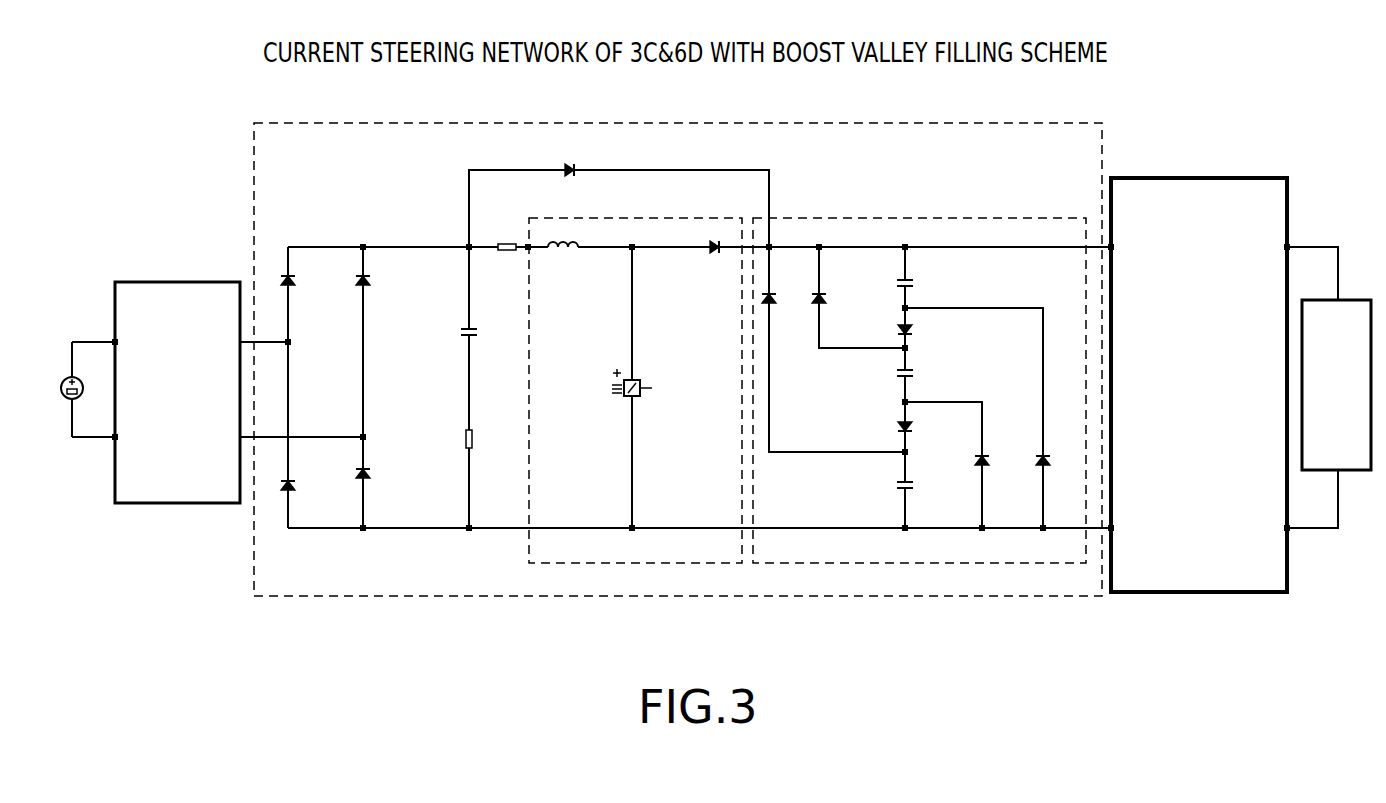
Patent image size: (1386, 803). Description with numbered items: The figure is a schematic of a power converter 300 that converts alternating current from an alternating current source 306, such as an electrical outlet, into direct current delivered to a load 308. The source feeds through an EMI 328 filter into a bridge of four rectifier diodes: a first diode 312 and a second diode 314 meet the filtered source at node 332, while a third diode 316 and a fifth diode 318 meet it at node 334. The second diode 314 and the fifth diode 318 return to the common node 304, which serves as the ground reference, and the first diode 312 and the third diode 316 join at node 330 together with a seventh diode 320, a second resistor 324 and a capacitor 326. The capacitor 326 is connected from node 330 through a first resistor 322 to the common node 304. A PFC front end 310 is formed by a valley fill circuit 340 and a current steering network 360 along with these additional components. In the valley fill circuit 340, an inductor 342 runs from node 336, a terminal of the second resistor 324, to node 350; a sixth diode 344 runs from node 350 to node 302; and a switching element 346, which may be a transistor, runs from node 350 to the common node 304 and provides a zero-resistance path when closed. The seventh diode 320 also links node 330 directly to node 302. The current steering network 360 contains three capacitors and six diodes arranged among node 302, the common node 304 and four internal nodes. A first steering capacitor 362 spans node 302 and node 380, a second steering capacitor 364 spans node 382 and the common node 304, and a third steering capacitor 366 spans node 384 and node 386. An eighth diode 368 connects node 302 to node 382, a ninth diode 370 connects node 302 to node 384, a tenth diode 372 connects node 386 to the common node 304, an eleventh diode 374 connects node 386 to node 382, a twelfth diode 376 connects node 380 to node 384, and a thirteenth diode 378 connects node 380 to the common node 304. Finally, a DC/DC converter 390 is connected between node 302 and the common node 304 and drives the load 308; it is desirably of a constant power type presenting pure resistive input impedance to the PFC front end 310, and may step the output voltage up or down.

The power converter 300 is at (1150, 82).
The node 302 is at (948, 245).
The common node 304 is at (875, 530).
The alternating current source 306 is at (72, 400).
The load 308 is at (1350, 298).
The PFC front end 310 is at (935, 123).
The diode D1 312 is at (286, 279).
The diode D2 314 is at (284, 490).
The diode D3 316 is at (370, 281).
The diode D5 318 is at (371, 474).
The diode D7 320 is at (572, 176).
The resistor R7 322 is at (464, 438).
The resistor R13 324 is at (507, 243).
The capacitor C2 326 is at (466, 333).
The EMI 328 is at (132, 506).
The node 330 is at (402, 244).
The node 332 is at (292, 343).
The node 334 is at (368, 437).
The node 336 is at (530, 249).
The valley fill circuit 340 is at (578, 565).
The inductor L1 342 is at (586, 247).
The diode D6 344 is at (707, 257).
The switching element S3 346 is at (623, 392).
The node 350 is at (630, 250).
The current steering network 360 is at (822, 565).
The capacitor C9 362 is at (897, 283).
The capacitor C10 364 is at (897, 486).
The capacitor C11 366 is at (912, 375).
The diode D8 368 is at (772, 302).
The diode D9 370 is at (822, 300).
The diode D10 372 is at (984, 466).
The diode D11 374 is at (910, 431).
The diode D12 376 is at (912, 331).
The diode D13 378 is at (1040, 456).
The node 380 is at (910, 309).
The node 382 is at (900, 452).
The node 384 is at (900, 350).
The node 386 is at (900, 402).
The DC/DC converter 390 is at (1190, 594).